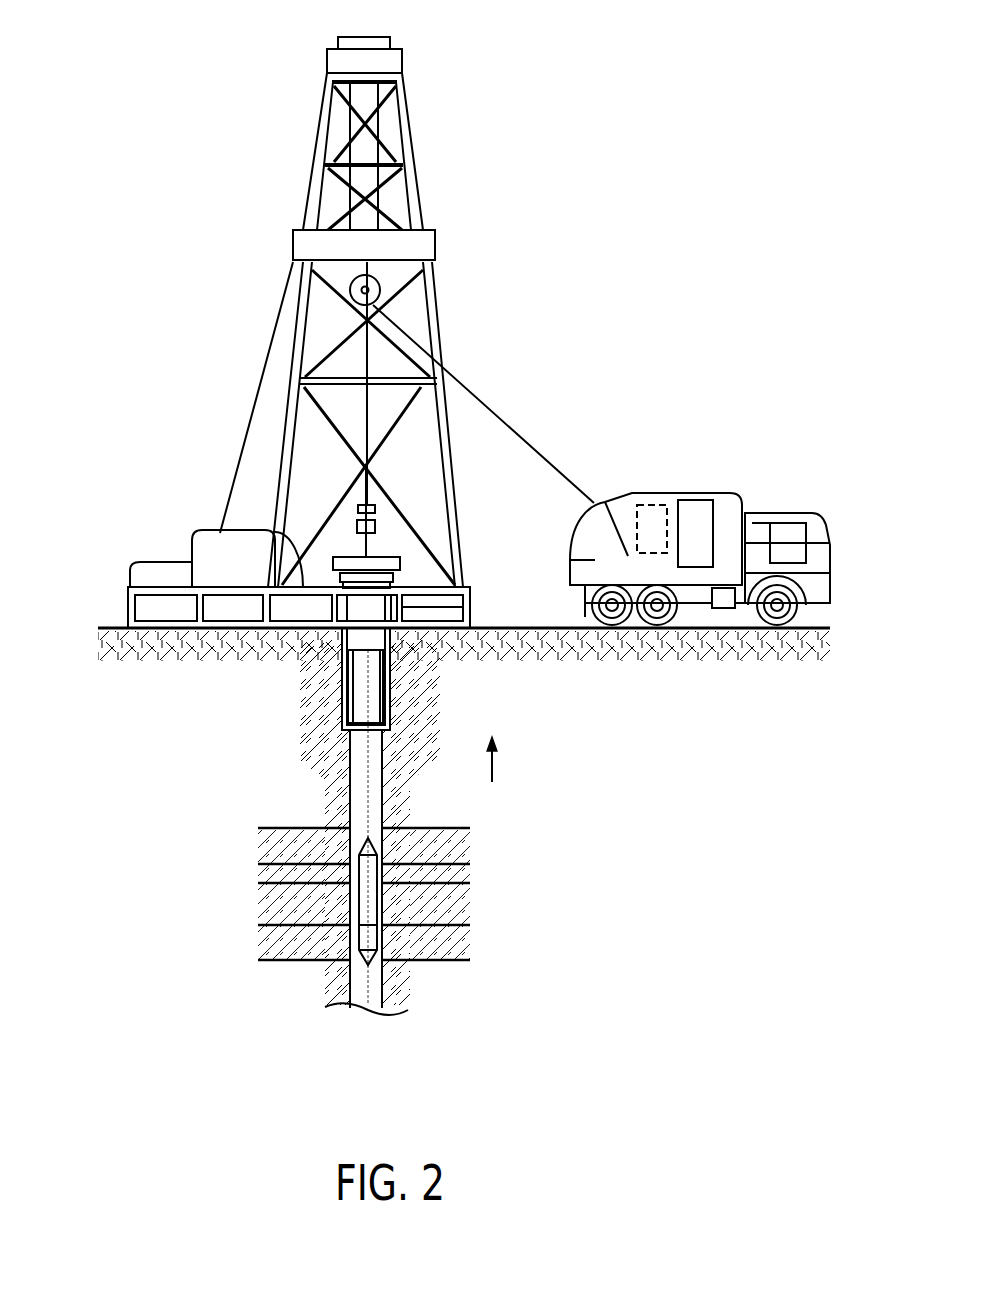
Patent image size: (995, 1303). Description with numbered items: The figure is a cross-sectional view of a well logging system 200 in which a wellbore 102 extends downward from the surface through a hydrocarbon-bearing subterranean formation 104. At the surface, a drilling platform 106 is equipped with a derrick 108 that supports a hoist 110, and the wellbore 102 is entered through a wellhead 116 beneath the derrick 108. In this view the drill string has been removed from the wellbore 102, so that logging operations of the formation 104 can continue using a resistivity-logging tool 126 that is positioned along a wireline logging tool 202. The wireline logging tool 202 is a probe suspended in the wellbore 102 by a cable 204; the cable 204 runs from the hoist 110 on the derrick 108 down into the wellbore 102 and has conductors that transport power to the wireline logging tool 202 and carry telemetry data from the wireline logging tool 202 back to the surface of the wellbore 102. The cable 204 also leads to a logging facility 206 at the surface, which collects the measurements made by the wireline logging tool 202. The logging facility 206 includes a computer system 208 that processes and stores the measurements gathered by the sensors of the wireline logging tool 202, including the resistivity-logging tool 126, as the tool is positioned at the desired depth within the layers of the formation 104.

The well logging system 200 is at (268, 65).
The derrick 108 is at (418, 193).
The hoist 110 is at (378, 293).
The wellhead 116 is at (392, 555).
The drilling platform 106 is at (128, 609).
The cable 204 is at (474, 392).
The logging facility 206 is at (707, 493).
The computer system 208 is at (650, 504).
The wellbore 102 is at (383, 773).
The subterranean formation 104 is at (490, 823).
The wireline logging tool 202 is at (358, 893).
The resistivity-logging tool 126 is at (367, 940).